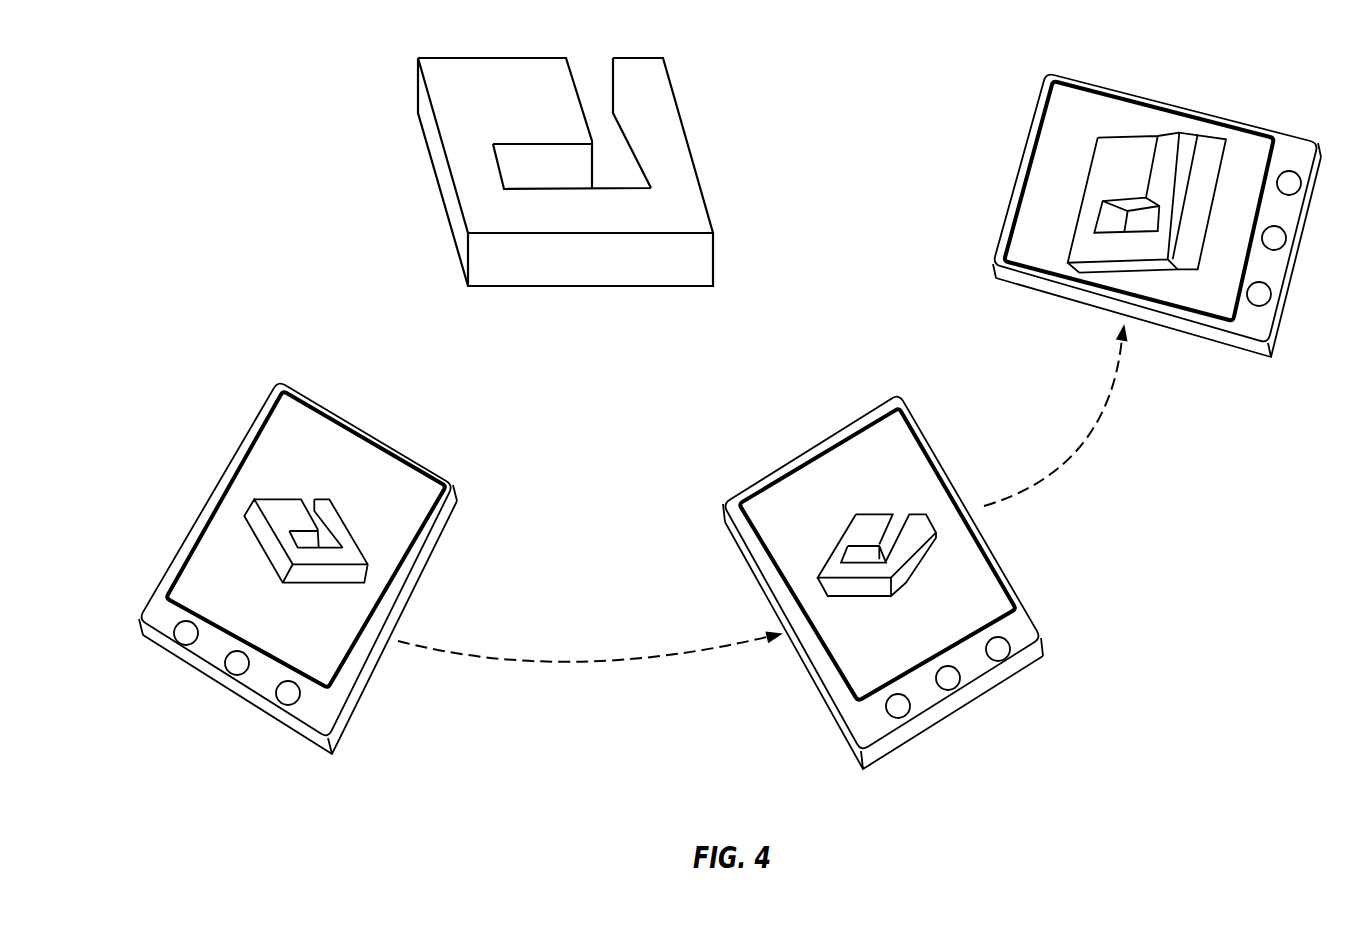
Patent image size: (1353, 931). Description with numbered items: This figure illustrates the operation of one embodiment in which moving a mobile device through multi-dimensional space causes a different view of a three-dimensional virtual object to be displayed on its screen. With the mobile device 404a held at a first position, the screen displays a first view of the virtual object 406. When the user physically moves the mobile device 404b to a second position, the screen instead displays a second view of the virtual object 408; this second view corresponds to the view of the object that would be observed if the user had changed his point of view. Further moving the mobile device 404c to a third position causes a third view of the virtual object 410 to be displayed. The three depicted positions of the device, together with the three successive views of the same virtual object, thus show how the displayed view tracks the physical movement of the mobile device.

The mobile device at a first position 404a is at (346, 569).
The mobile device at a second position 404b is at (858, 567).
The mobile device at a third position 404c is at (1127, 196).
The first view of the virtual object 406 is at (283, 444).
The second view of the virtual object 408 is at (768, 507).
The third view of the virtual object 410 is at (1033, 240).